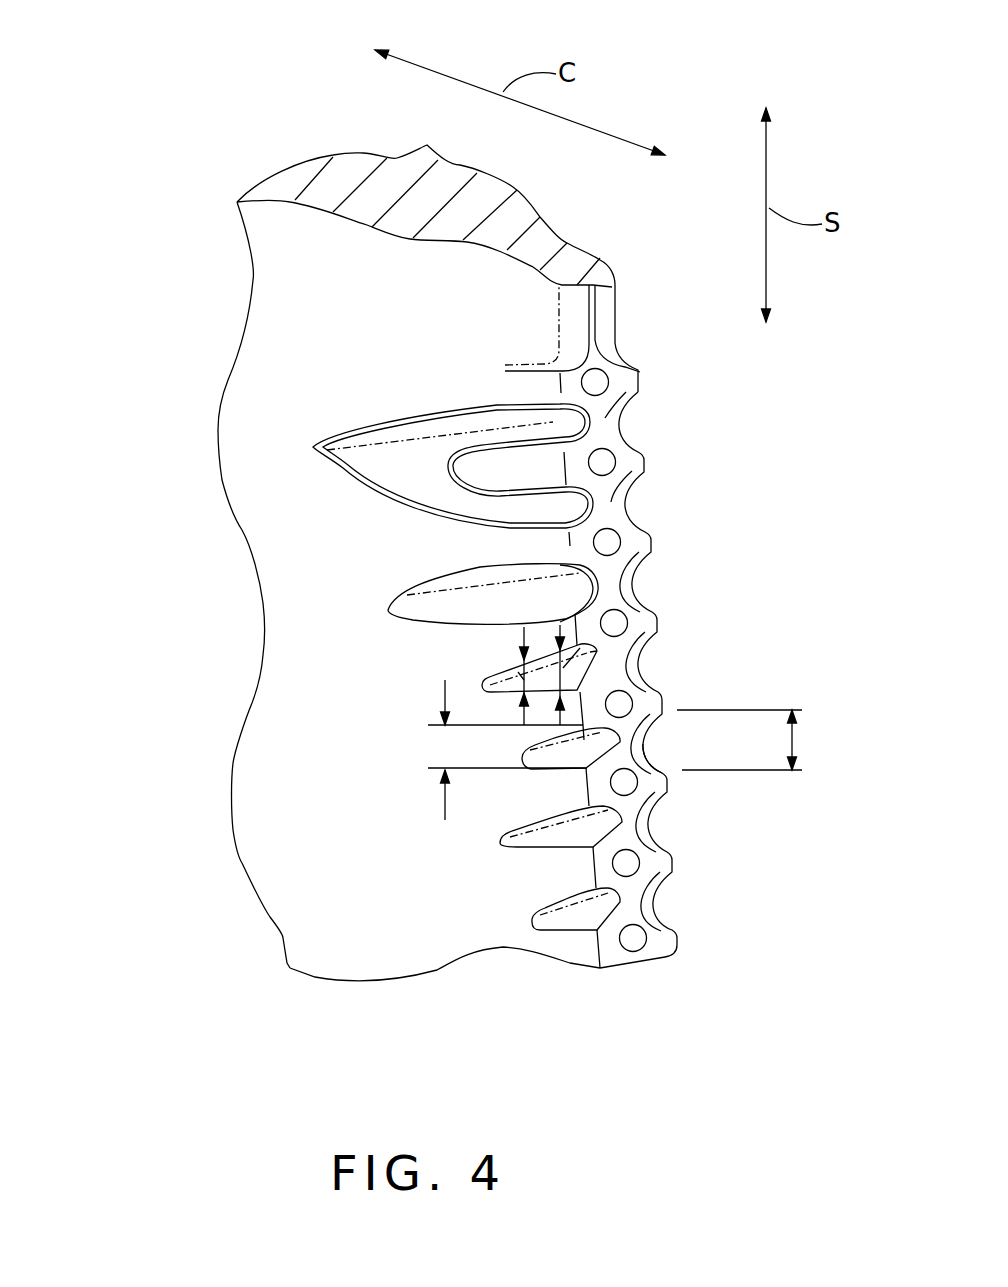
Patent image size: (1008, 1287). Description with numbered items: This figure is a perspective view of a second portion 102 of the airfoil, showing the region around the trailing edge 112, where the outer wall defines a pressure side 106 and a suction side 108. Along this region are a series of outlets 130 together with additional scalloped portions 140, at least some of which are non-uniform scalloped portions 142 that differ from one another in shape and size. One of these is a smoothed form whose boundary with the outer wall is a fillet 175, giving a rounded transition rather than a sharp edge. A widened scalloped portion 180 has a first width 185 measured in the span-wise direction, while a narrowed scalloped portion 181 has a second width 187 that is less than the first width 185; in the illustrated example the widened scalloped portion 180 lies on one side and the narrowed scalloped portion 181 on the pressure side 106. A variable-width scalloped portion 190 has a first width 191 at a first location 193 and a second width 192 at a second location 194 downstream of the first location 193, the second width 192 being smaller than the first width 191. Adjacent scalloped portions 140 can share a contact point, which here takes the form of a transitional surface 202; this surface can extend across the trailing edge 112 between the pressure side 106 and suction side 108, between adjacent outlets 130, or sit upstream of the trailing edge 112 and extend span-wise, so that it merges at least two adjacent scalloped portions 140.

The second portion 102 is at (98, 113).
The pressure side 106 is at (393, 233).
The suction side 108 is at (537, 197).
The trailing edge 112 is at (593, 317).
The outlets 130 is at (596, 383).
The scalloped portions 140 is at (570, 429).
The non-uniform scalloped portions 142 is at (423, 600).
The fillet 175 is at (428, 417).
The widened scalloped portion 180 is at (648, 740).
The narrowed scalloped portion 181 is at (515, 755).
The first width 185 is at (794, 741).
The second width 187 is at (443, 803).
The variable-width scalloped portion 190 is at (478, 677).
The first width 191 is at (560, 625).
The second width 192 is at (523, 626).
The first location 193 is at (595, 655).
The second location 194 is at (523, 675).
The transitional surface 202 is at (390, 450).